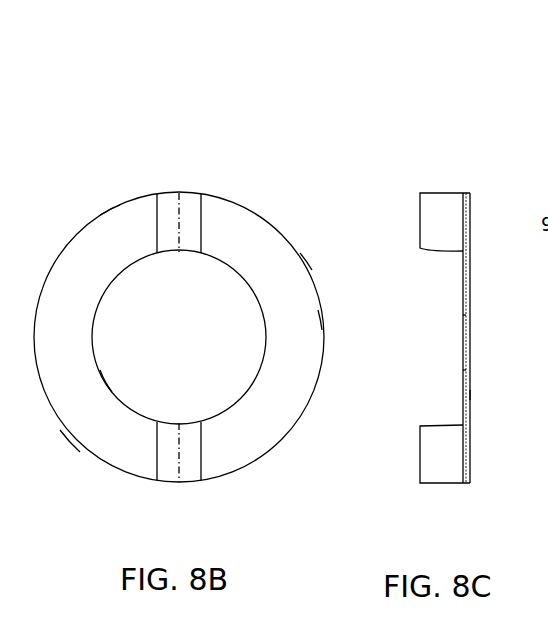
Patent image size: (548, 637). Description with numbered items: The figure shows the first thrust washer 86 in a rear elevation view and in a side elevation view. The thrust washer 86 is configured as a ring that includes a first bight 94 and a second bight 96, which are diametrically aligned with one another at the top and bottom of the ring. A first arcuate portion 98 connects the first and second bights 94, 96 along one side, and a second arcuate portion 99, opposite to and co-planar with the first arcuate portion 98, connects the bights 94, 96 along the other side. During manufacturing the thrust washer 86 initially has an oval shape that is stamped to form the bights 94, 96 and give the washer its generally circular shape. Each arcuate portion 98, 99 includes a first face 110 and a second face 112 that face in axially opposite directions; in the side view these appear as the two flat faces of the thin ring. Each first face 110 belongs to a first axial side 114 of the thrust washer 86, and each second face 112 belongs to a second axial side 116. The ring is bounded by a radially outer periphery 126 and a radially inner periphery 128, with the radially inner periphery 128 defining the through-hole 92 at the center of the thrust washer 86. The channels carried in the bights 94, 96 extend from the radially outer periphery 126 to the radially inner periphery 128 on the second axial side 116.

In FIG. 8B, the thrust washer 86 is at (175, 143).
In FIG. 8C, the thrust washer 86 is at (450, 140).
In FIG. 8B, the through-hole 92 is at (96, 326).
In FIG. 8B, the first bight 94 is at (188, 196).
In FIG. 8C, the first bight 94 is at (436, 214).
In FIG. 8B, the second bight 96 is at (186, 478).
In FIG. 8C, the second bight 96 is at (436, 452).
In FIG. 8B, the first arcuate portion 98 is at (302, 284).
In FIG. 8C, the first arcuate portion 98 is at (470, 341).
In FIG. 8B, the second arcuate portion 99 is at (108, 224).
In FIG. 8B, the first face 110 is at (87, 238).
In FIG. 8C, the first face 110 is at (463, 292).
In FIG. 8C, the second face 112 is at (470, 291).
In FIG. 8B, the first axial side 114 is at (308, 347).
In FIG. 8C, the first axial side 114 is at (463, 372).
In FIG. 8C, the second axial side 116 is at (470, 395).
In FIG. 8B, the radially outer periphery 126 is at (75, 438).
In FIG. 8C, the radially outer periphery 126 is at (463, 322).
In FIG. 8B, the radially inner periphery 128 is at (108, 388).